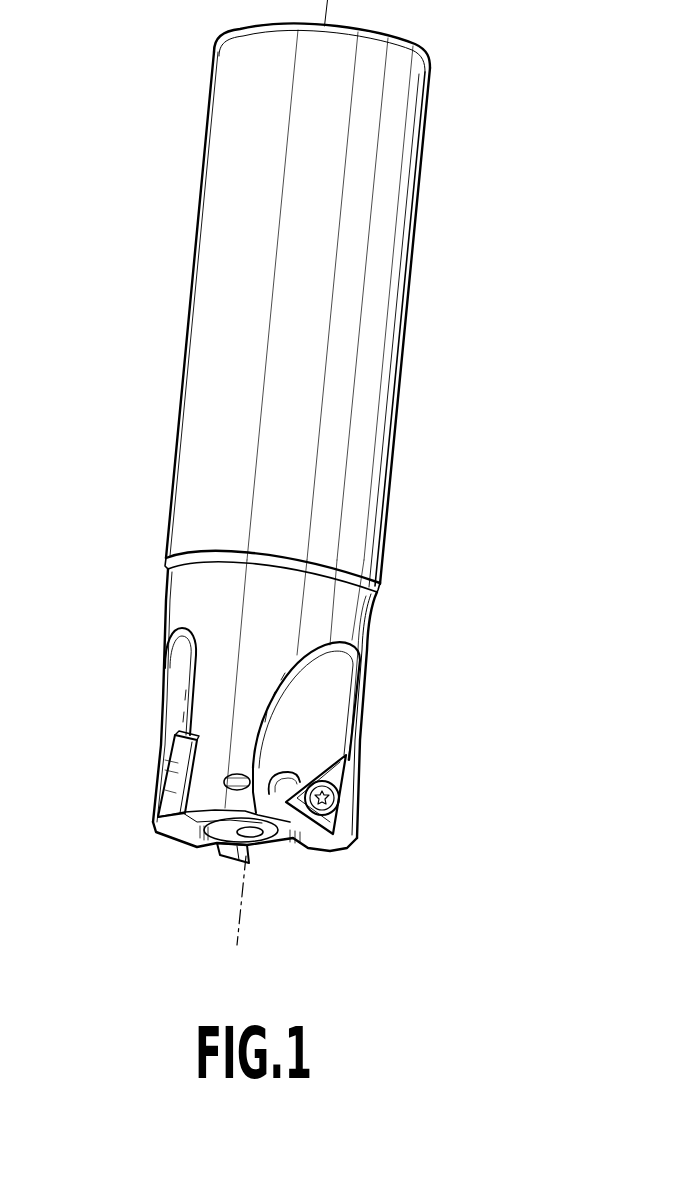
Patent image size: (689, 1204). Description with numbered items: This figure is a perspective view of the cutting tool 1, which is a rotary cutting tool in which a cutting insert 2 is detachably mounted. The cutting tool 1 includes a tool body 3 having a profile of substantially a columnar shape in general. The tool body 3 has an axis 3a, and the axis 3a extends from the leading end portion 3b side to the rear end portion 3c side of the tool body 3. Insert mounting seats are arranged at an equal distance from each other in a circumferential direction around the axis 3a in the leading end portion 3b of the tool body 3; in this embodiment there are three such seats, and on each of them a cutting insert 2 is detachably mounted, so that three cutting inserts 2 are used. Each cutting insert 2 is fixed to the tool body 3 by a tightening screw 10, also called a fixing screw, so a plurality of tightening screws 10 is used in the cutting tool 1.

The cutting tool 1 is at (377, 268).
The cutting insert 2 is at (177, 782).
The tool body 3 is at (348, 615).
The axis 3a is at (240, 922).
The leading end portion 3b is at (123, 864).
The rear end portion 3c is at (176, 83).
The tightening screw 10 is at (333, 798).